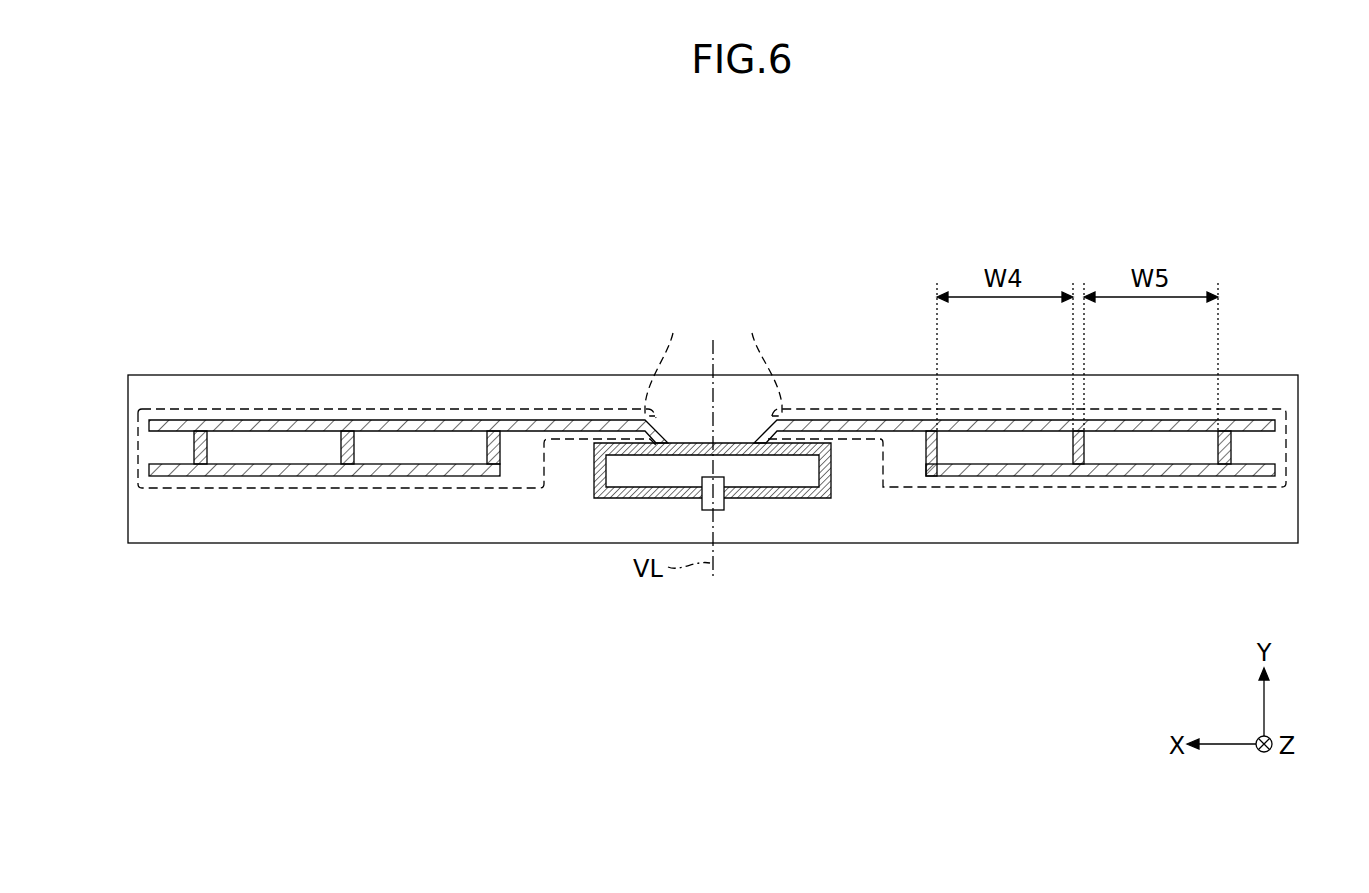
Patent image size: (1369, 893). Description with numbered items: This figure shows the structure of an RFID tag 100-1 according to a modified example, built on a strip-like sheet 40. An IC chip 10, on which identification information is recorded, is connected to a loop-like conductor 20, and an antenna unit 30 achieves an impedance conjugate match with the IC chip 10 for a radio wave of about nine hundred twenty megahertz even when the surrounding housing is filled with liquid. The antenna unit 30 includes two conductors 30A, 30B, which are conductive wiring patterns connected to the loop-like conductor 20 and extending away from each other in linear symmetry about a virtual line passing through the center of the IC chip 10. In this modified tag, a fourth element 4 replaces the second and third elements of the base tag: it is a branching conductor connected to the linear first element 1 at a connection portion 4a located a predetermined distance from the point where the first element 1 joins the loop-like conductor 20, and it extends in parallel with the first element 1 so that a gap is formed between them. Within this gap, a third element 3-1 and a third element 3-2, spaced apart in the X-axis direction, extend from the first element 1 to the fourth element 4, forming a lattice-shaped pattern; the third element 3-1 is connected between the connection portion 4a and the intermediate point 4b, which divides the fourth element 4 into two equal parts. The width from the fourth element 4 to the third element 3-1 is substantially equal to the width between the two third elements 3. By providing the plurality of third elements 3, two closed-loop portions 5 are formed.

The RFID tag 100-1 is at (1208, 224).
The first element 1 is at (1272, 425).
The third elements 3 is at (347, 447).
The third element 3-1 is at (1073, 448).
The third element 3-2 is at (1217, 450).
The fourth element 4 is at (1272, 470).
The connection portion 4a is at (932, 436).
The intermediate point 4b is at (1132, 472).
The closed-loop portions 5 is at (1007, 441).
The IC chip 10 is at (725, 503).
The loop-like conductor 20 is at (831, 482).
The antenna unit 30 is at (713, 339).
The conductor 30A is at (756, 361).
The conductor 30B is at (670, 361).
The sheet 40 is at (1265, 532).